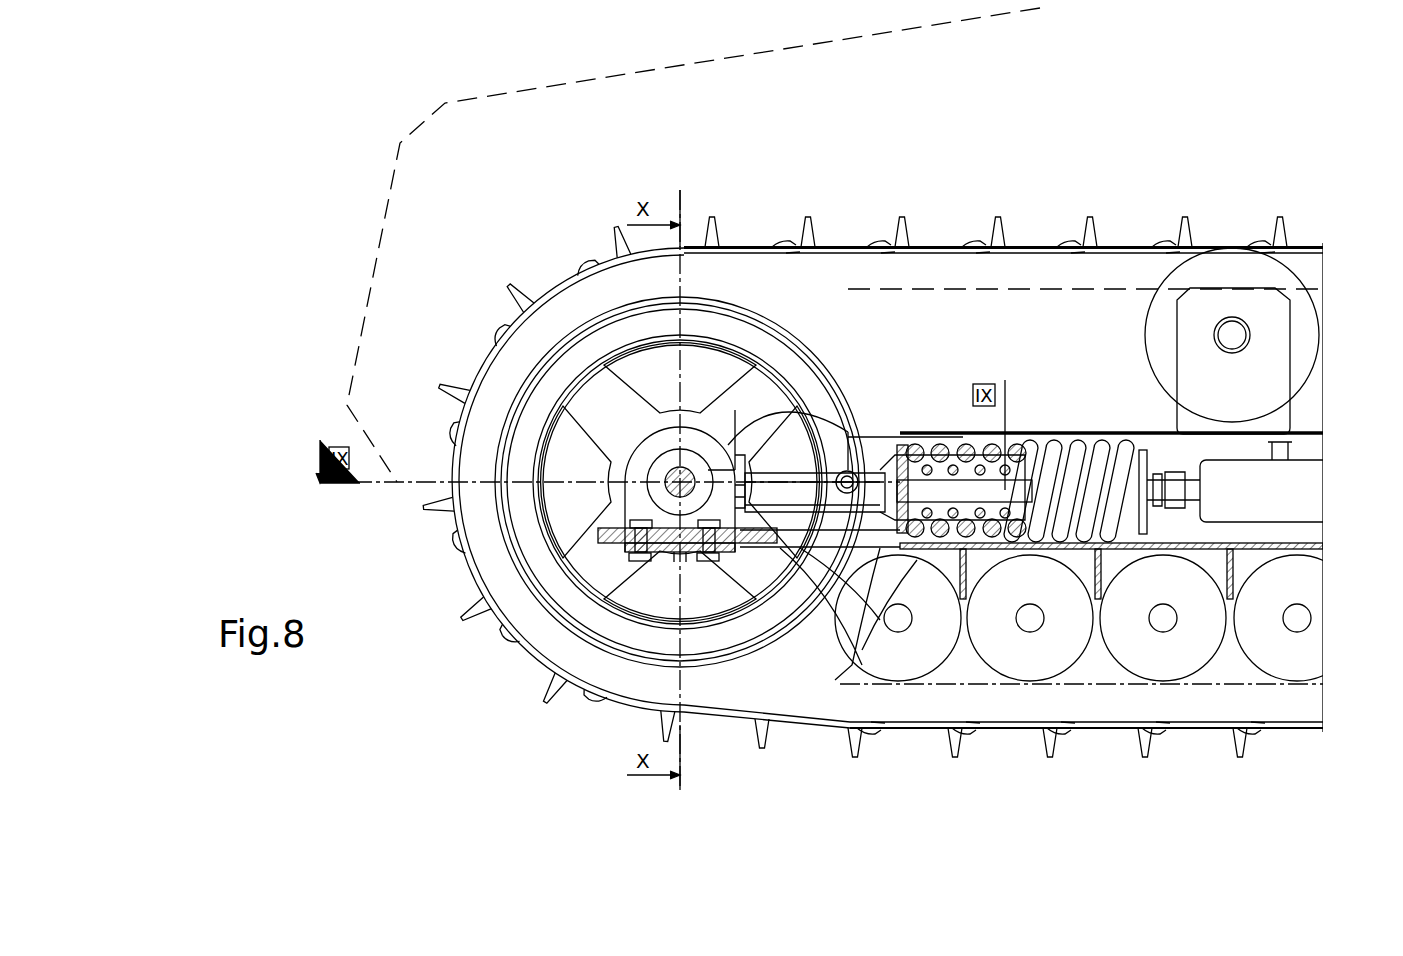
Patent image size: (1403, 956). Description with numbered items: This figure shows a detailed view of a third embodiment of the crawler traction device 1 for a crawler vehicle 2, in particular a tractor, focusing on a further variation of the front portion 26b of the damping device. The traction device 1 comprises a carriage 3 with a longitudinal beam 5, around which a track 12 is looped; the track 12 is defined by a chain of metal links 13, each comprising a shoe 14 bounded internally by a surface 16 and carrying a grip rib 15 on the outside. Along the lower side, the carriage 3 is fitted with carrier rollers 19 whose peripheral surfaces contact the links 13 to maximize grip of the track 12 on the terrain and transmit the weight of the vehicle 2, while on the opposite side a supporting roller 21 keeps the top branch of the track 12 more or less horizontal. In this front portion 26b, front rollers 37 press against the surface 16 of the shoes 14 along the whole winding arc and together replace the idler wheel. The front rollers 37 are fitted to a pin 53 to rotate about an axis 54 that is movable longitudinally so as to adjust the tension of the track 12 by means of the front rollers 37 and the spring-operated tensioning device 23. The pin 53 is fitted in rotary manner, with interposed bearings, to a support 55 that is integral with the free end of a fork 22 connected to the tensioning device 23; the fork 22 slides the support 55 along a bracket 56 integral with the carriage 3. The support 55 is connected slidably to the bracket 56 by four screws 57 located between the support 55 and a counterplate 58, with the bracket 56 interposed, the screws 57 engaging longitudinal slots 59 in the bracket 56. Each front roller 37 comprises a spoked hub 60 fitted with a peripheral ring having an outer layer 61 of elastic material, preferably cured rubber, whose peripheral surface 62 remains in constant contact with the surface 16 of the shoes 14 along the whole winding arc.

The crawler traction device 1 is at (1015, 222).
The crawler vehicle 2 is at (669, 58).
The carriage 3 is at (1290, 543).
The longitudinal beam 5 is at (1255, 555).
The track 12 is at (855, 471).
The links 13 is at (741, 245).
The shoe 14 is at (918, 246).
The grip rib 15 is at (900, 222).
The surface 16 is at (795, 254).
The carrier rollers 19 is at (1175, 655).
The supporting rollers 21 is at (1227, 268).
The fork 22 is at (790, 425).
The tensioning device 23 is at (1021, 438).
The front portion 26b is at (527, 288).
The front rollers 37 is at (685, 480).
The pin 53 is at (665, 460).
The axis 54 is at (702, 430).
The support 55 is at (637, 495).
The bracket 56 is at (775, 540).
The screws 57 is at (642, 562).
The counterplate 58 is at (690, 553).
The longitudinal slots 59 is at (627, 485).
The spoked hub 60 is at (535, 535).
The outer layer 61 is at (483, 527).
The peripheral surface 62 is at (871, 378).